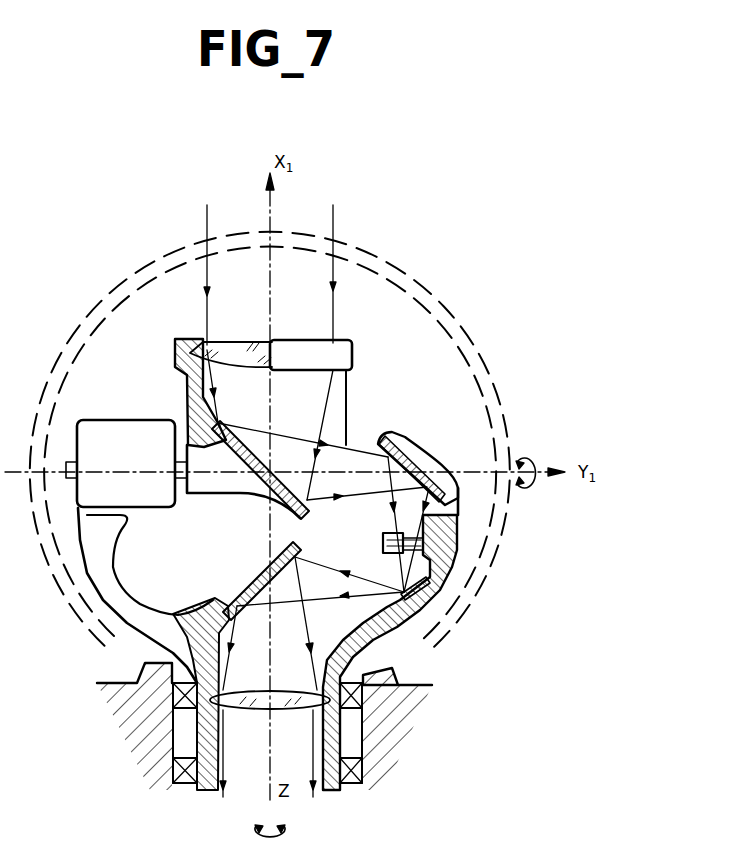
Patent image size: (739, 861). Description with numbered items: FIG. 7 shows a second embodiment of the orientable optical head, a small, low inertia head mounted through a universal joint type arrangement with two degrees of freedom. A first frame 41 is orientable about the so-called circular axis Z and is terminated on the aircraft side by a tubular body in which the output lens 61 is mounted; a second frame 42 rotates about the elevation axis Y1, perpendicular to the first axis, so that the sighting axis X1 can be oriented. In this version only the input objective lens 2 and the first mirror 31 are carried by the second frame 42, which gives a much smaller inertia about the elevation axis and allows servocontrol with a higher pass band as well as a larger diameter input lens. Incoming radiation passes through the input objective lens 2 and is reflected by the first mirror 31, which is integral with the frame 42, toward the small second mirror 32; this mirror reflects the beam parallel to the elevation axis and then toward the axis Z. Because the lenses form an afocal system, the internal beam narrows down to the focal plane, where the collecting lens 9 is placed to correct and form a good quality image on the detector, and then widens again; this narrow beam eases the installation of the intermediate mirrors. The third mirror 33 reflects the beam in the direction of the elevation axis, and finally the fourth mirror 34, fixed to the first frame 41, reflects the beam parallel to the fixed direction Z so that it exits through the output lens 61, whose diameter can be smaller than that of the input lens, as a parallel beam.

The input objective lens 2 is at (243, 346).
The second frame 42 is at (190, 388).
The first mirror 31 is at (252, 452).
The second mirror 32 is at (382, 440).
The collecting lens 9 is at (402, 533).
The third mirror 33 is at (403, 590).
The fourth mirror 34 is at (299, 548).
The first frame 41 is at (249, 605).
The output lens 61 is at (284, 692).